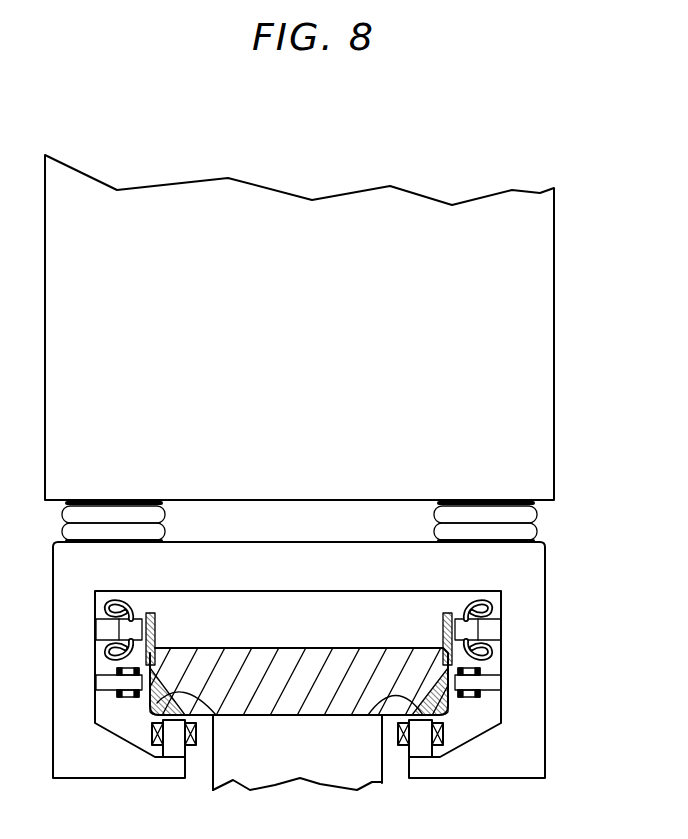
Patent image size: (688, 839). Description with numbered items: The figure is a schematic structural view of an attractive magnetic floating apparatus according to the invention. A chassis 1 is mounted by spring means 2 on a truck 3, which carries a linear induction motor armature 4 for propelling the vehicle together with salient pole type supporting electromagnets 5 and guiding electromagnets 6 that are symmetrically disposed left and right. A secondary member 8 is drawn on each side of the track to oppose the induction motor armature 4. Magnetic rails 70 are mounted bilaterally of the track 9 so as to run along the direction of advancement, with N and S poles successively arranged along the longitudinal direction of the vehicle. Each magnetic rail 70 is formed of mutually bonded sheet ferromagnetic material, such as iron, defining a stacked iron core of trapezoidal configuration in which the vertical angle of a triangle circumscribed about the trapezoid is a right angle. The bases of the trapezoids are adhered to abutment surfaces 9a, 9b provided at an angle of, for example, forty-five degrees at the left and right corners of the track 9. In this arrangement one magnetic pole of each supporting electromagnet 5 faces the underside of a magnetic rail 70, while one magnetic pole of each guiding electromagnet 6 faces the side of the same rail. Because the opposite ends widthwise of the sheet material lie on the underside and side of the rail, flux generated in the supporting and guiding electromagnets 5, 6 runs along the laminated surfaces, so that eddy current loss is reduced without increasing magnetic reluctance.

The chassis 1 is at (546, 325).
The spring means 2 is at (532, 531).
The truck 3 is at (535, 568).
The linear induction motor armature 4 is at (492, 631).
The supporting electromagnet 5 is at (421, 745).
The guiding electromagnet 6 is at (497, 684).
The side guide bars 8 is at (440, 628).
The track 9 is at (253, 772).
The abutment surface 9a is at (371, 718).
The abutment surface 9b is at (217, 718).
The magnetic rail 70 is at (445, 710).